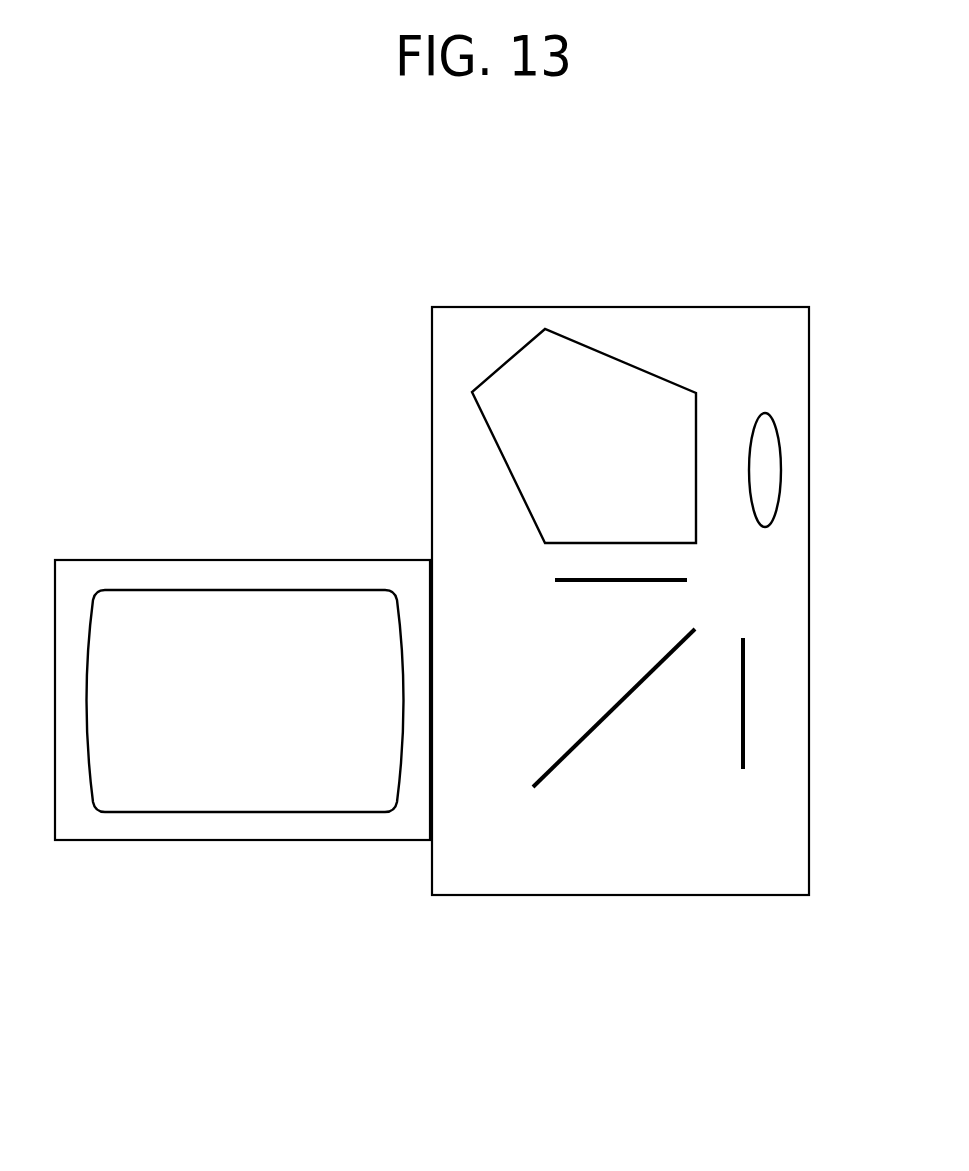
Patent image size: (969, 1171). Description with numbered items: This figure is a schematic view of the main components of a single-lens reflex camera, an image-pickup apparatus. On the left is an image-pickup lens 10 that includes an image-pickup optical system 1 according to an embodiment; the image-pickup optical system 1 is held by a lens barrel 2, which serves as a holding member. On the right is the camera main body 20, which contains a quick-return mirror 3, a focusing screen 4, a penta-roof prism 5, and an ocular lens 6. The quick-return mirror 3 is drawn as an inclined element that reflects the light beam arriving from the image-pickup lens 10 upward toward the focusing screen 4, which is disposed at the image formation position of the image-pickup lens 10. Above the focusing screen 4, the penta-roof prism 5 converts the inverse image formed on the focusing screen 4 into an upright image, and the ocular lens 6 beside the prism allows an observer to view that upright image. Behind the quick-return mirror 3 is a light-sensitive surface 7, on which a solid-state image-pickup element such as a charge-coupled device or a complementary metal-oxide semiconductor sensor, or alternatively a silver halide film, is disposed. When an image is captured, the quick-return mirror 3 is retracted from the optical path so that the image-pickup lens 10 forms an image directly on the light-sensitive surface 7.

The image-pickup optical system 1 is at (146, 594).
The lens barrel 2 is at (238, 828).
The quick-return mirror 3 is at (553, 770).
The focusing screen 4 is at (665, 577).
The penta-roof prism 5 is at (563, 347).
The ocular lens 6 is at (773, 443).
The light-sensitive surface 7 is at (743, 700).
The image-pickup lens 10 is at (272, 520).
The camera main body 20 is at (698, 271).